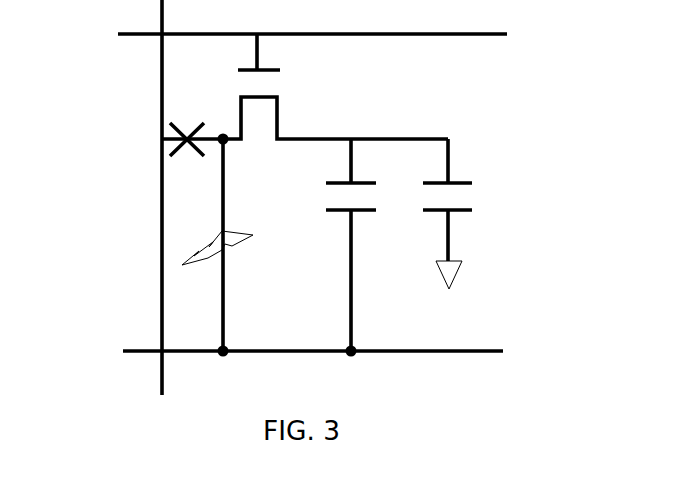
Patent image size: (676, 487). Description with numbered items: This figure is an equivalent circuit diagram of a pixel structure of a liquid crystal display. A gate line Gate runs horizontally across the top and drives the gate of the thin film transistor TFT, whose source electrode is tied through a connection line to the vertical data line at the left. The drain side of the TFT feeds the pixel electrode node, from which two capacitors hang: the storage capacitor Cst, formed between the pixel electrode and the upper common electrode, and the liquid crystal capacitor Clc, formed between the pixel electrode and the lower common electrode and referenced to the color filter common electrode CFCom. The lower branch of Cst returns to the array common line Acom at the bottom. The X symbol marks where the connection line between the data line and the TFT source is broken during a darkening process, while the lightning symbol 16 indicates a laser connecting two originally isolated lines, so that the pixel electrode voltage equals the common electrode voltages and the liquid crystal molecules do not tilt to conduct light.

The laser connection 16 is at (182, 265).
The gate line Gate is at (285, 39).
The thin film transistor TFT is at (305, 86).
The storage capacitor Cst is at (365, 245).
The liquid crystal capacitor Clc is at (476, 200).
The color filter common electrode CFCom is at (495, 284).
The array common electrode Acom is at (275, 355).